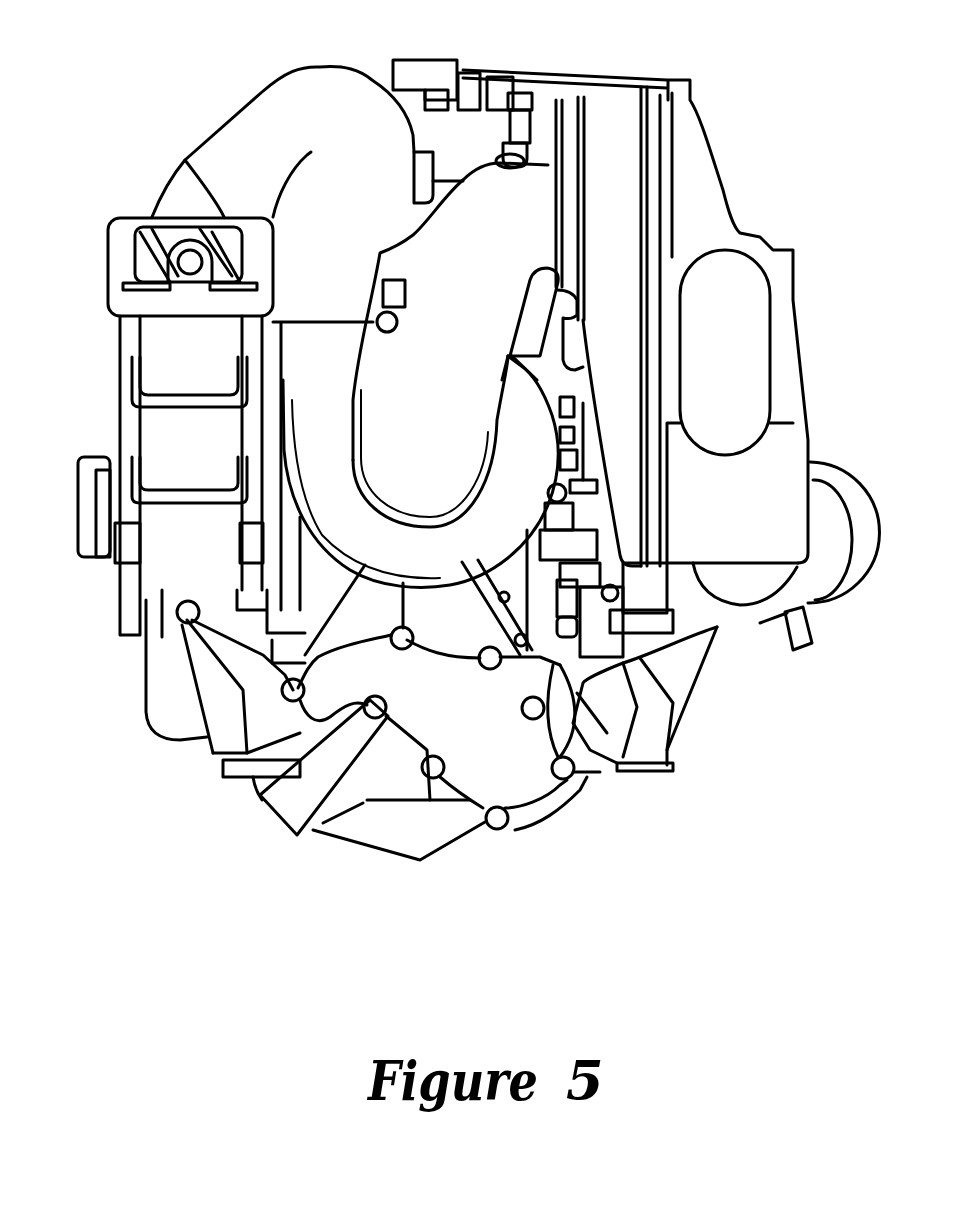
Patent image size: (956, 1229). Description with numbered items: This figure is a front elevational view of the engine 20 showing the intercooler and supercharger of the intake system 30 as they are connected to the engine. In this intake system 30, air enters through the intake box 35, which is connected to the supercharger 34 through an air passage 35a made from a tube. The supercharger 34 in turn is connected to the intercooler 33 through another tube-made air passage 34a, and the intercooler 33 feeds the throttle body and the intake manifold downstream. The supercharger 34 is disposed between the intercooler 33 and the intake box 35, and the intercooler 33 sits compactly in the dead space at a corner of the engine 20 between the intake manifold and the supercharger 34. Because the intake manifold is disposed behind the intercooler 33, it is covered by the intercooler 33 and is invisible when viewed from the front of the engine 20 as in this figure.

The engine 20 is at (700, 763).
The intake system 30 is at (200, 117).
The intercooler 33 is at (150, 343).
The supercharger 34 is at (443, 557).
The air passage 34a is at (318, 82).
The intake box 35 is at (690, 157).
The air passage 35a is at (528, 188).